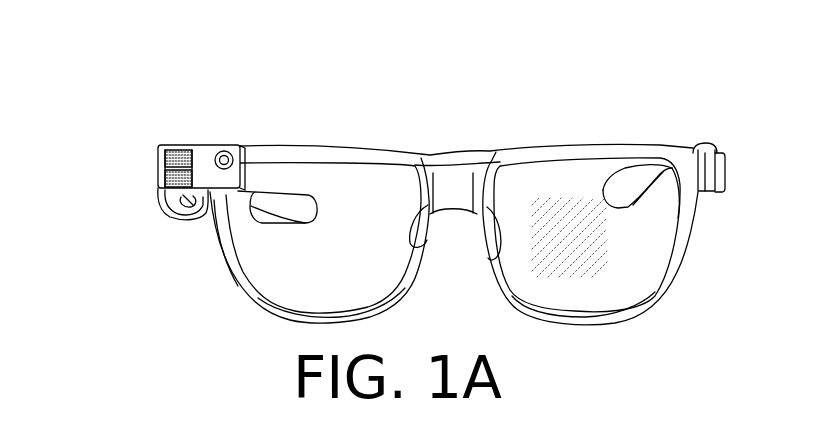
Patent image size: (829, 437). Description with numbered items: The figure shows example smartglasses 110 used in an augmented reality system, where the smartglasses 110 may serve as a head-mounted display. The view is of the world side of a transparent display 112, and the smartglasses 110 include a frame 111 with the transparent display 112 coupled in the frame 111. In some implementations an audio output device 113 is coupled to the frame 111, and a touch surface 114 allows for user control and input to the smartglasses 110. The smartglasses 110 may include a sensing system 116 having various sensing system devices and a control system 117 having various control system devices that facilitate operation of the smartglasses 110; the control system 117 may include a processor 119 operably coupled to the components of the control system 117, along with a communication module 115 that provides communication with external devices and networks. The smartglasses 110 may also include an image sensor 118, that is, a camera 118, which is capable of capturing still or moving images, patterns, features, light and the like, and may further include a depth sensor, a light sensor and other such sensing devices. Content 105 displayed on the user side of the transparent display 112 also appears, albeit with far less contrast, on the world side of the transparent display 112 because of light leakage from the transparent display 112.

The smartglasses 110 is at (135, 131).
The frame 111 is at (450, 175).
The transparent display 112 is at (302, 276).
The content 105 is at (580, 258).
The audio output device 113 is at (173, 215).
The touch surface 114 is at (152, 158).
The communication module 115 is at (193, 148).
The control system 117 is at (178, 178).
The processor 119 is at (178, 168).
The image sensor 118 is at (232, 149).
The sensing system 116 is at (163, 203).